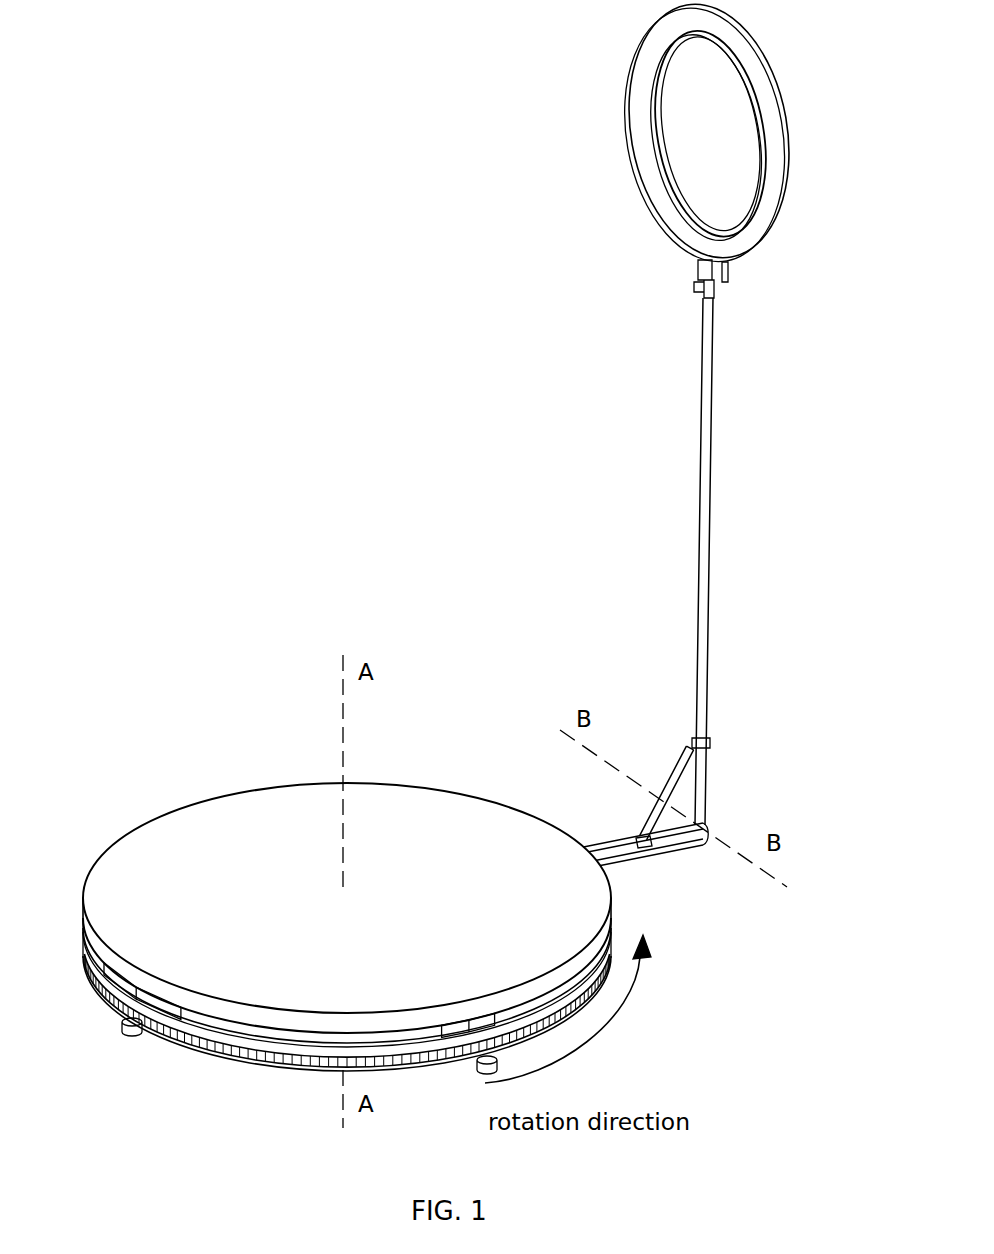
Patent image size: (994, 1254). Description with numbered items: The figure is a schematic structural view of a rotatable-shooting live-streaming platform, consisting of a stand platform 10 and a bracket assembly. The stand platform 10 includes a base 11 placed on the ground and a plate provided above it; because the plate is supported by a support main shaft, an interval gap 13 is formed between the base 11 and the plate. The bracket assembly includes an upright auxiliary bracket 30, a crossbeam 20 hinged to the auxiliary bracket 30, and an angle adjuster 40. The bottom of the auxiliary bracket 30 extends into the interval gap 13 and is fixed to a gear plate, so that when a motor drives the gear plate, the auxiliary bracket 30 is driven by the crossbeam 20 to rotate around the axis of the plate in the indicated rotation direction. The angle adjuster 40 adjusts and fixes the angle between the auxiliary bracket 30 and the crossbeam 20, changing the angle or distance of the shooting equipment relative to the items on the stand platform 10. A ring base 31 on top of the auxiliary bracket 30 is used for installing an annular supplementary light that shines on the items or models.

The stand platform 10 is at (318, 808).
The base 11 is at (305, 1040).
The interval gap 13 is at (207, 1017).
The crossbeam 20 is at (690, 840).
The auxiliary bracket 30 is at (710, 355).
The ring base 31 is at (652, 72).
The angle adjuster 40 is at (687, 763).